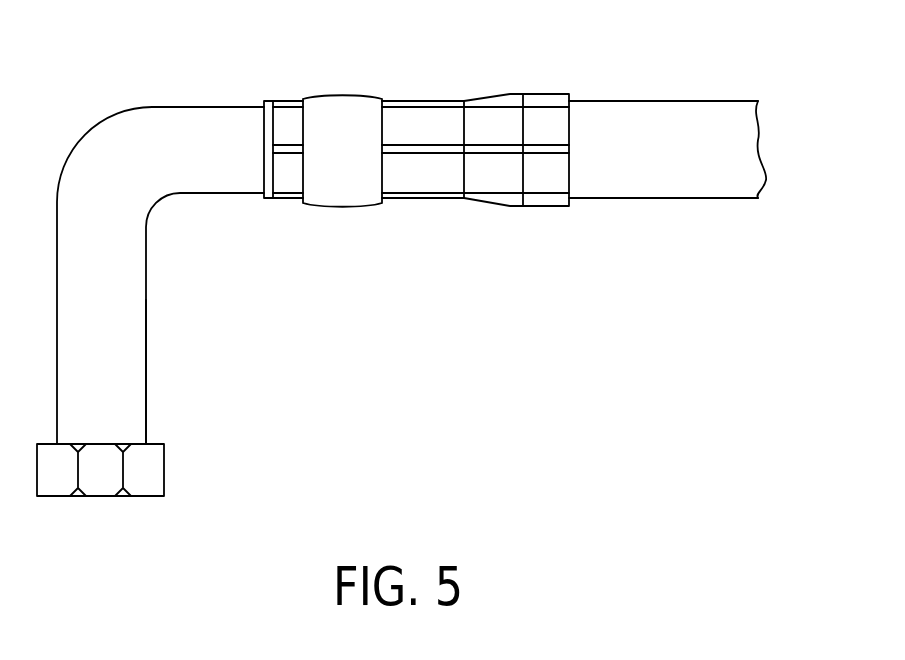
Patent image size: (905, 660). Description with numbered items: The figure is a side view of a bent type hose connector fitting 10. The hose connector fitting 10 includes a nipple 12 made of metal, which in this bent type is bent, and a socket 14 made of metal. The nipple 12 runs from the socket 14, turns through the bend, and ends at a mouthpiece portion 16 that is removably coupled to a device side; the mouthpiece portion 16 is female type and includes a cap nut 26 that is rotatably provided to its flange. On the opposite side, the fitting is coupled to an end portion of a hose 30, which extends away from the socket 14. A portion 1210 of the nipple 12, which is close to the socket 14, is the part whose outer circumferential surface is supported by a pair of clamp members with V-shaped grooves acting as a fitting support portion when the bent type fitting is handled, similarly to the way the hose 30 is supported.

The hose connector fitting 10 is at (360, 63).
The nipple 12 is at (73, 152).
The portion of the nipple 1210 is at (202, 135).
The socket 14 is at (438, 100).
The mouthpiece portion 16 is at (118, 400).
The cap nut 26 is at (164, 467).
The hose 30 is at (636, 100).